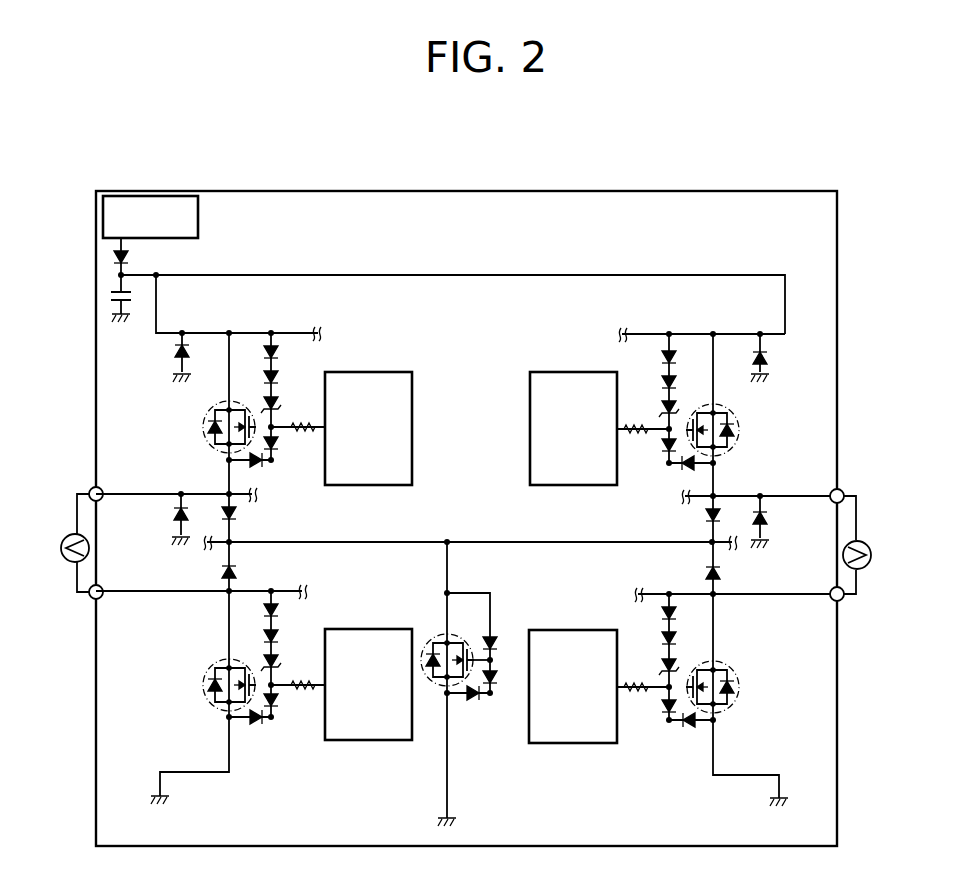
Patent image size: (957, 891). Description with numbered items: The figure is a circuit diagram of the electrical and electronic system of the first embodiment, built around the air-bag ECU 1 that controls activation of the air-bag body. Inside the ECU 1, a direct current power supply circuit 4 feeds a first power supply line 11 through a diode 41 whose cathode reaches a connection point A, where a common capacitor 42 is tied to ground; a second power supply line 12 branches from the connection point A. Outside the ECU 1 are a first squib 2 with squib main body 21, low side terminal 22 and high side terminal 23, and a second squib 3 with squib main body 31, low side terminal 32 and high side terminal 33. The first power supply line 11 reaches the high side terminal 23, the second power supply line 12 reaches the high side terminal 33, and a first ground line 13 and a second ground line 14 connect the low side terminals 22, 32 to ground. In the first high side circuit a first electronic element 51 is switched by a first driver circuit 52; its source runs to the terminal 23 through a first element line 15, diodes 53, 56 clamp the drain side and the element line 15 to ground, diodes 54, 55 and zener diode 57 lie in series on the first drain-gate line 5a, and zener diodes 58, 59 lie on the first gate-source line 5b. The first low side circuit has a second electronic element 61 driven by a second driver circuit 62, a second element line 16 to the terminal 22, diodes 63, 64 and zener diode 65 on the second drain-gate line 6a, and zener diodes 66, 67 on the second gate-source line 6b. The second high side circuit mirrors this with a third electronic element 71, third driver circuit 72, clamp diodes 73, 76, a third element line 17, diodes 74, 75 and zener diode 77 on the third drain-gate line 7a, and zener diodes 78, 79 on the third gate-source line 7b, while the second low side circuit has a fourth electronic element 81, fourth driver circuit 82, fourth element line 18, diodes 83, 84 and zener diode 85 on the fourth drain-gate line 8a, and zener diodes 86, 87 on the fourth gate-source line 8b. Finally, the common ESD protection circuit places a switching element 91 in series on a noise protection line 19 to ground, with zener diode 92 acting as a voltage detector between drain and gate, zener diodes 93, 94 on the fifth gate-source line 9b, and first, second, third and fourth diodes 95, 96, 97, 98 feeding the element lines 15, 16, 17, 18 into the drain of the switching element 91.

The air-bag electronic control unit (ECU) 1 is at (438, 191).
The first squib 2 is at (54, 566).
The second squib 3 is at (864, 569).
The direct current power supply circuit 4 is at (198, 217).
The first power supply line 11 is at (163, 333).
The second power supply line 12 is at (460, 275).
The first ground line 13 is at (184, 772).
The second ground line 14 is at (750, 775).
The first element line 15 is at (122, 494).
The second element line 16 is at (150, 592).
The third element line 17 is at (778, 496).
The fourth element line 18 is at (780, 594).
The noise protection line 19 is at (364, 542).
The squib main body 21 is at (72, 536).
The low side terminal 22 is at (92, 602).
The high side terminal 23 is at (92, 486).
The squib main body 31 is at (860, 538).
The low side terminal 32 is at (840, 602).
The high side terminal 33 is at (837, 489).
The diode 41 is at (114, 257).
The common capacitor 42 is at (114, 308).
The first electronic element 51 is at (204, 427).
The first driver circuit 52 is at (412, 412).
The diode 53 is at (181, 353).
The diode 54 is at (280, 352).
The diode 55 is at (279, 380).
The diode 56 is at (176, 514).
The zener diode 57 is at (279, 405).
The zener diode 58 is at (279, 444).
The zener diode 59 is at (262, 464).
The first drain-gate line 5a is at (248, 333).
The first gate-source line 5b is at (277, 462).
The second electronic element 61 is at (204, 686).
The second driver circuit 62 is at (368, 741).
The diode 63 is at (282, 612).
The diode 64 is at (273, 638).
The zener diode 65 is at (273, 663).
The zener diode 66 is at (277, 700).
The zener diode 67 is at (260, 721).
The second drain-gate line 6a is at (256, 594).
The second gate-source line 6b is at (266, 722).
The third electronic element 71 is at (742, 430).
The third driver circuit 72 is at (530, 446).
The diode 73 is at (768, 358).
The diode 74 is at (660, 356).
The diode 75 is at (662, 382).
The diode 76 is at (768, 520).
The zener diode 77 is at (662, 408).
The zener diode 78 is at (662, 446).
The zener diode 79 is at (686, 466).
The third drain-gate line 7a is at (680, 334).
The third gate-source line 7b is at (670, 464).
The fourth electronic element 81 is at (742, 687).
The fourth driver circuit 82 is at (574, 744).
The diode 83 is at (660, 613).
The diode 84 is at (668, 640).
The zener diode 85 is at (668, 667).
The zener diode 86 is at (662, 706).
The zener diode 87 is at (686, 724).
The fourth drain-gate line 8a is at (704, 594).
The fourth gate-source line 8b is at (673, 724).
The switching element 91 is at (430, 638).
The zener diode 92 is at (494, 640).
The zener diode 93 is at (493, 680).
The zener diode 94 is at (475, 700).
The first diode 95 is at (238, 514).
The second diode 96 is at (238, 572).
The third diode 97 is at (706, 516).
The fourth diode 98 is at (706, 573).
The fifth gate-source line 9b is at (490, 700).
The connection point A is at (160, 272).